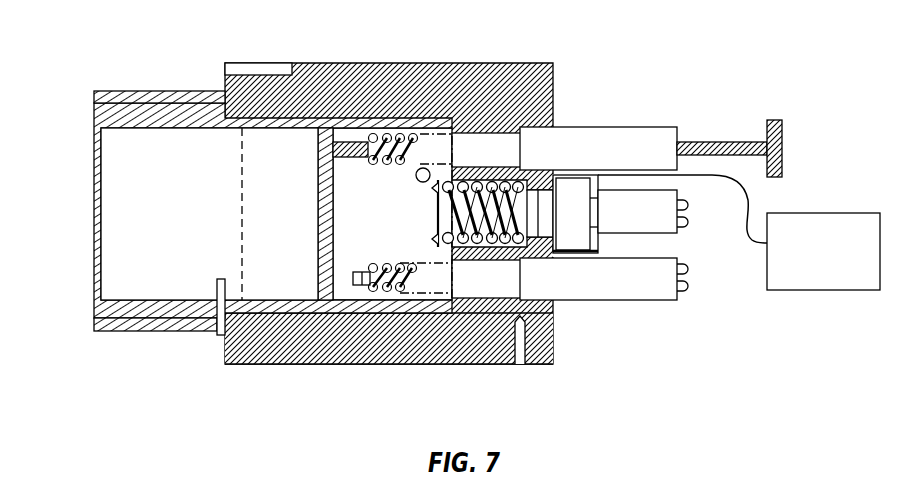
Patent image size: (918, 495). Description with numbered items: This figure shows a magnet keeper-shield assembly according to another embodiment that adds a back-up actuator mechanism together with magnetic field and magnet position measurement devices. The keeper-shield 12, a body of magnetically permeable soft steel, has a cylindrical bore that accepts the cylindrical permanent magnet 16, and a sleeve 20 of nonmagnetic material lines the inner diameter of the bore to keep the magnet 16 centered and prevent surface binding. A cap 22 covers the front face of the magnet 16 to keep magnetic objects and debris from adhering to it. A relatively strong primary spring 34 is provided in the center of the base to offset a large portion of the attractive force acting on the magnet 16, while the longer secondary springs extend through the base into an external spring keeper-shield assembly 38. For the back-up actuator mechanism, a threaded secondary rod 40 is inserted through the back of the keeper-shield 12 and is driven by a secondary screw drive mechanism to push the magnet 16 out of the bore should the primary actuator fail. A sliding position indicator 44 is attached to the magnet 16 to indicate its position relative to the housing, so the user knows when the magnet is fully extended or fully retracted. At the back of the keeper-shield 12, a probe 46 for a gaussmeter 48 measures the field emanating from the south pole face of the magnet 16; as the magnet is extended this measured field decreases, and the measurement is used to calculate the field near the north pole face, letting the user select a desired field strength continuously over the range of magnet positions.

The keeper-shield 12 is at (389, 197).
The permanent magnet 16 is at (172, 190).
The sleeve 20 is at (389, 338).
The cap 22 is at (239, 215).
The primary spring 34 is at (478, 236).
The external spring keeper-shield assembly 38 is at (651, 133).
The secondary rod 40 is at (375, 167).
The sliding position indicator 44 is at (187, 295).
The probe 46 is at (400, 205).
The gaussmeter 48 is at (739, 232).